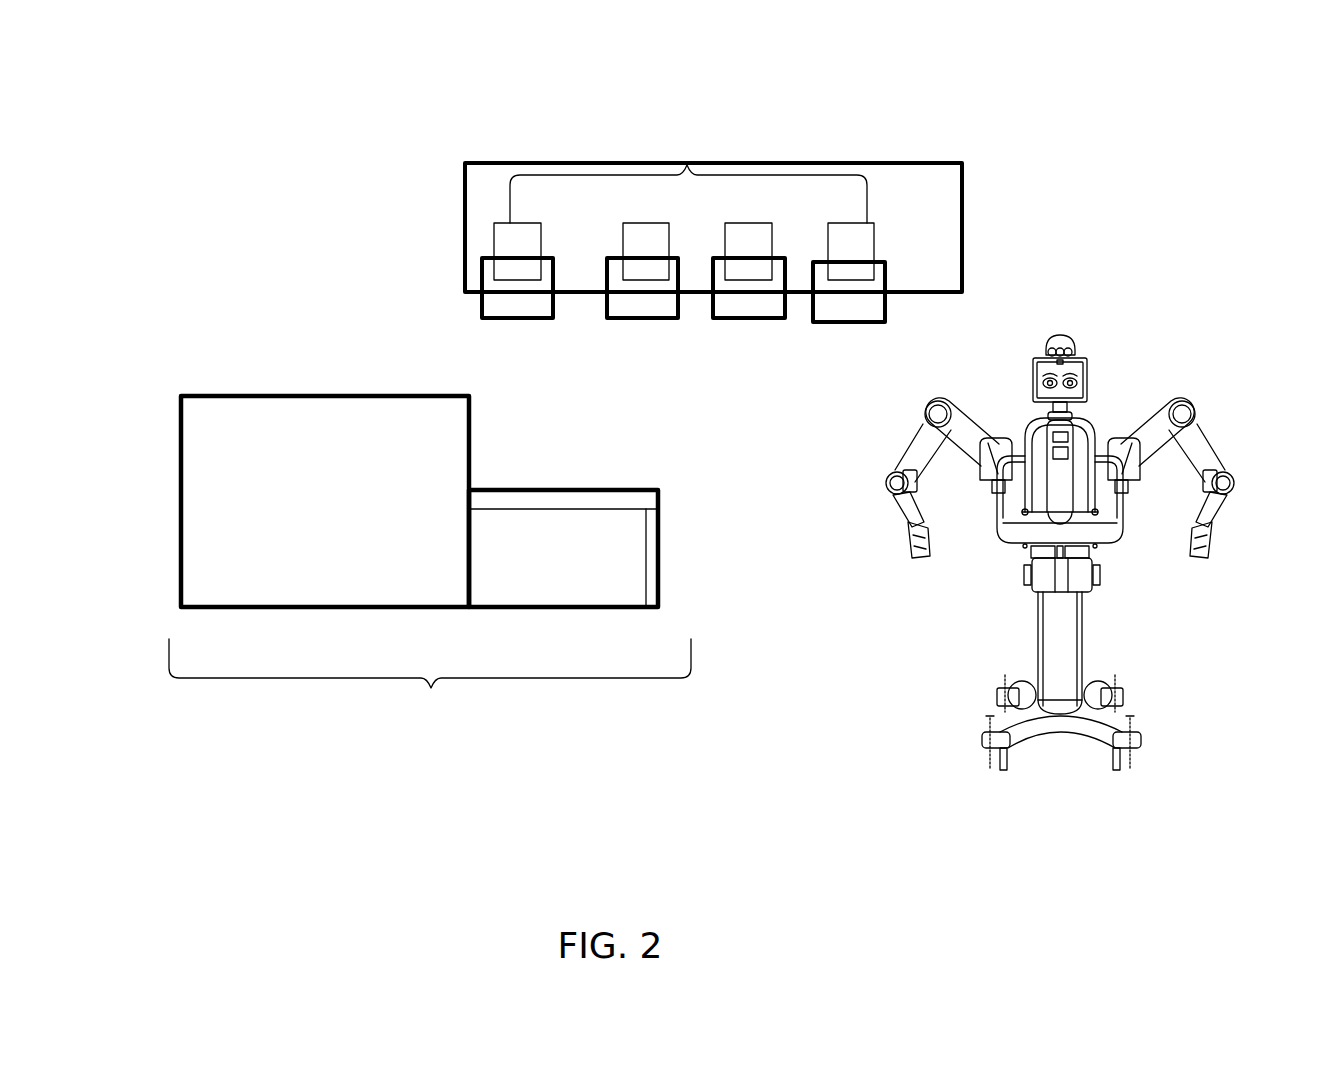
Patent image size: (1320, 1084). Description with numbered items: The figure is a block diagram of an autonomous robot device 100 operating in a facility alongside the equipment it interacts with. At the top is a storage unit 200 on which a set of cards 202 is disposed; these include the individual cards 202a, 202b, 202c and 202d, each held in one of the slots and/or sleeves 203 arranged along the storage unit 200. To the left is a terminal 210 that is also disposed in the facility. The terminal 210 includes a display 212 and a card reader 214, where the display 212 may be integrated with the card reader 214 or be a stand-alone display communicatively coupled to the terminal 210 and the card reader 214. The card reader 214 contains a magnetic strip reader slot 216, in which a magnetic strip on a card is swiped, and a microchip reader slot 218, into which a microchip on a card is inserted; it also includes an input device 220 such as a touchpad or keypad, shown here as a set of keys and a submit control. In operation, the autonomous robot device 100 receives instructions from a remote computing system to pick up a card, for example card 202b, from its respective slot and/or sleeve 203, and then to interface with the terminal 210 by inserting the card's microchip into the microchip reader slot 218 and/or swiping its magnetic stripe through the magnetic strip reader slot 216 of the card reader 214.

The autonomous robot device 100 is at (970, 597).
The storage unit 200 is at (888, 172).
The cards 202 is at (687, 165).
The card 202a is at (874, 247).
The card 202b is at (773, 247).
The card 202c is at (672, 247).
The card 202d is at (541, 226).
The slots and/or sleeves 203 is at (480, 318).
The terminal 210 is at (431, 688).
The display 212 is at (204, 394).
The card reader 214 is at (517, 471).
The magnetic strip reader slot 216 is at (610, 500).
The microchip reader slot 218 is at (645, 547).
The input device 220 is at (485, 593).